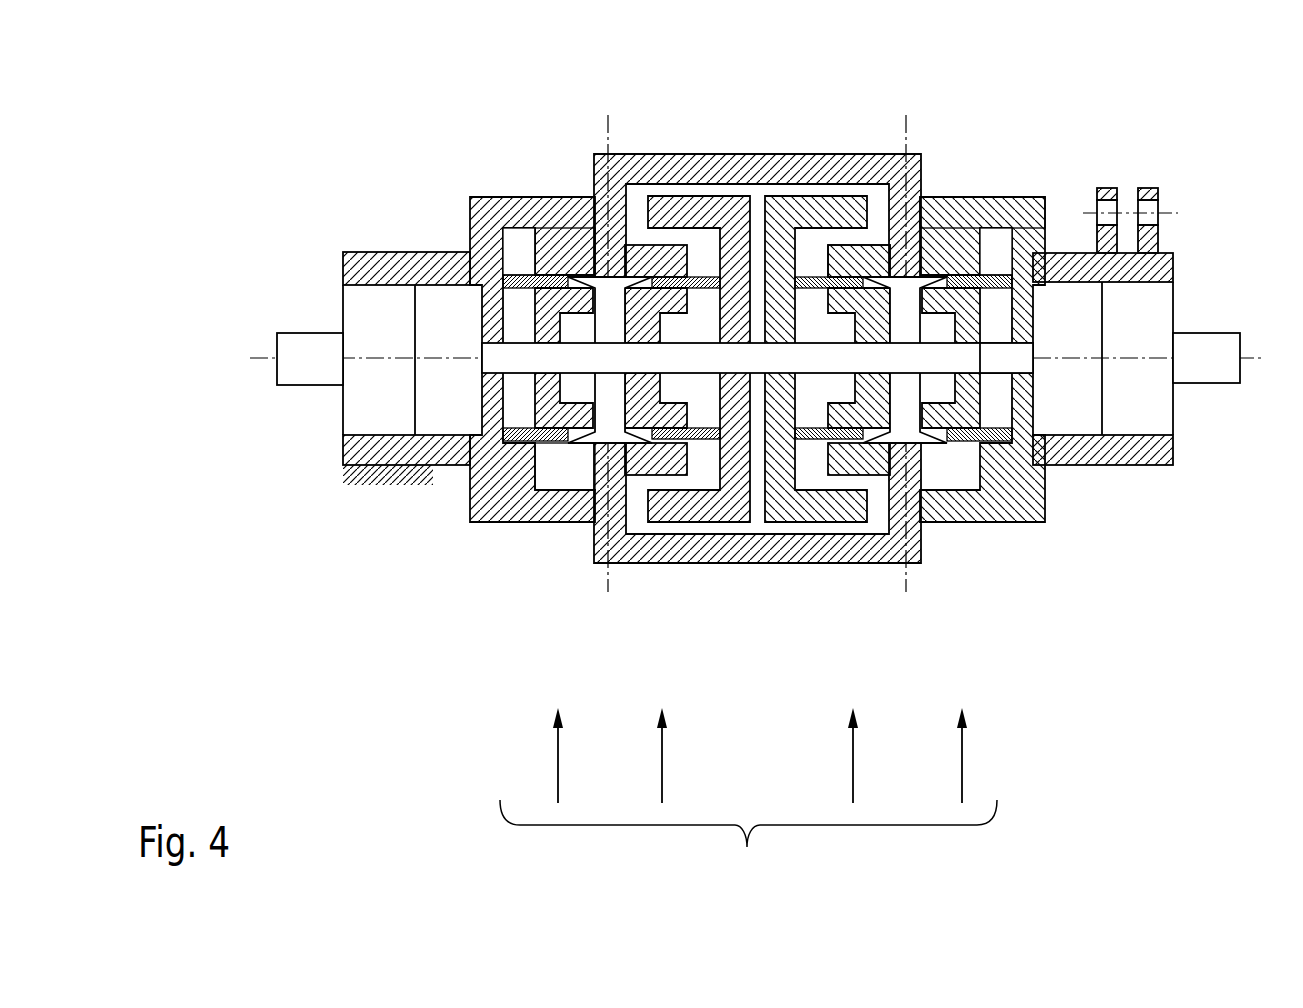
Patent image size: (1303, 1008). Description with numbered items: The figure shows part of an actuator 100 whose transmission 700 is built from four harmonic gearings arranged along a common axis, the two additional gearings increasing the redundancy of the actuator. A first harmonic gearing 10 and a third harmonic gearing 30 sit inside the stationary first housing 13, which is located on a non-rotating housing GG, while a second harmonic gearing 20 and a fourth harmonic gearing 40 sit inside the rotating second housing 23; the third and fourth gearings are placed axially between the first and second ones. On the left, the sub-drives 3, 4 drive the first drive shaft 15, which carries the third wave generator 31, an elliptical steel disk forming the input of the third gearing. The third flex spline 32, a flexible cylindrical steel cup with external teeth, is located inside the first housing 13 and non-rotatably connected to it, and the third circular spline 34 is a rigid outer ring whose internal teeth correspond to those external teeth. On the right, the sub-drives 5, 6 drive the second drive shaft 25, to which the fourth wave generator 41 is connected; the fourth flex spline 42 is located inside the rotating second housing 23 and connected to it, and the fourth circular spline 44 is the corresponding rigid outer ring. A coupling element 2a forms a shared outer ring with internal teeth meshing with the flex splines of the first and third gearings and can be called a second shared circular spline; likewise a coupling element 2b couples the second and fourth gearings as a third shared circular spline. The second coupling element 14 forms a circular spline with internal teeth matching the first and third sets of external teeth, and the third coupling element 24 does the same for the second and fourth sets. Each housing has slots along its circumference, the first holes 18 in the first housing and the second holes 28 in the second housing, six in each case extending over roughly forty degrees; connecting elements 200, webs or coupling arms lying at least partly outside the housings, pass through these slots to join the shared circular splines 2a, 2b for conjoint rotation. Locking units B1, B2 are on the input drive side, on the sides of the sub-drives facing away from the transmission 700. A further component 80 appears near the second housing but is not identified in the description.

The actuator 100 is at (268, 163).
The connecting elements 200 is at (757, 545).
The transmission 700 is at (748, 844).
The first harmonic gearing 10 is at (541, 758).
The second harmonic gearing 20 is at (944, 758).
The third harmonic gearing 30 is at (645, 758).
The fourth harmonic gearing 40 is at (835, 758).
The first transmission housing 13 is at (492, 505).
The second transmission housing 23 is at (1018, 505).
The first circular spline 14 is at (515, 250).
The third coupling element 24 is at (1005, 200).
The first drive shaft 15 is at (513, 353).
The second drive shaft 25 is at (1003, 355).
The first holes 18 is at (584, 232).
The second holes 28 is at (937, 205).
The coupling element 2a is at (578, 240).
The coupling element 2b is at (887, 240).
The third circular spline 34 is at (667, 255).
The fourth circular spline 44 is at (848, 255).
The third wave generator 31 is at (655, 413).
The third flex spline 32 is at (703, 427).
The fourth wave generator 41 is at (862, 430).
The fourth flex spline 42 is at (810, 415).
The sub-drive 3 is at (385, 400).
The sub-drive 4 is at (440, 400).
The sub-drive 5 is at (1077, 400).
The sub-drive 6 is at (1133, 400).
The sensor 80 is at (1148, 190).
The locking unit B1 is at (303, 373).
The locking unit B2 is at (1215, 375).
The housing GG is at (348, 483).